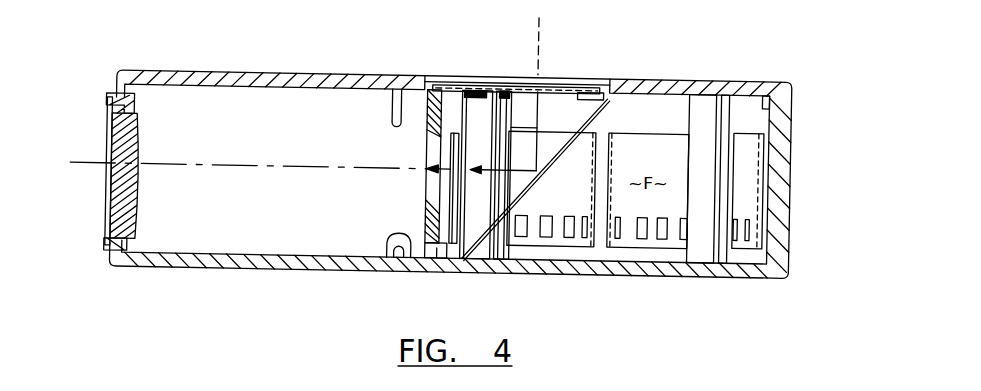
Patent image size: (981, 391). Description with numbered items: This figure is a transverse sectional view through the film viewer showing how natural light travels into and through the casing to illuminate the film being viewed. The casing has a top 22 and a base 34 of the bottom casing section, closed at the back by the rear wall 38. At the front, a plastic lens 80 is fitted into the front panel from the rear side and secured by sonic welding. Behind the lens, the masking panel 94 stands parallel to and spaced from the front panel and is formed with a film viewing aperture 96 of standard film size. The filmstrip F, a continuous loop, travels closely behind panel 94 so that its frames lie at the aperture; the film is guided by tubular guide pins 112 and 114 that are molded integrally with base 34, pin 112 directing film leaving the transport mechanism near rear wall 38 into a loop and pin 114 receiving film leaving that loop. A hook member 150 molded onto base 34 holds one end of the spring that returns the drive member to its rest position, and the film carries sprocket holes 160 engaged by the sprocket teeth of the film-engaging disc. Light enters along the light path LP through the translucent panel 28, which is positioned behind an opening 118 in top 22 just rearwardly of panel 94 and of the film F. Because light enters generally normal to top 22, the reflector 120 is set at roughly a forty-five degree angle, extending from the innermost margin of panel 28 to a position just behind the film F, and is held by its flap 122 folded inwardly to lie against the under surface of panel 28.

The top 22 is at (273, 70).
The base 34 is at (250, 268).
The rear wall 38 is at (793, 184).
The plastic lens 80 is at (112, 188).
The masking panel 94 is at (424, 112).
The film viewing aperture 96 is at (430, 147).
The hook member 150 is at (393, 241).
The filmstrip F is at (452, 187).
The guide pin 114 is at (480, 105).
The translucent panel 28 is at (517, 98).
The light path LP is at (550, 38).
The opening 118 is at (563, 83).
The flap 122 is at (590, 82).
The reflector 120 is at (590, 122).
The guide pin 112 is at (708, 110).
The sprocket holes 160 is at (742, 218).